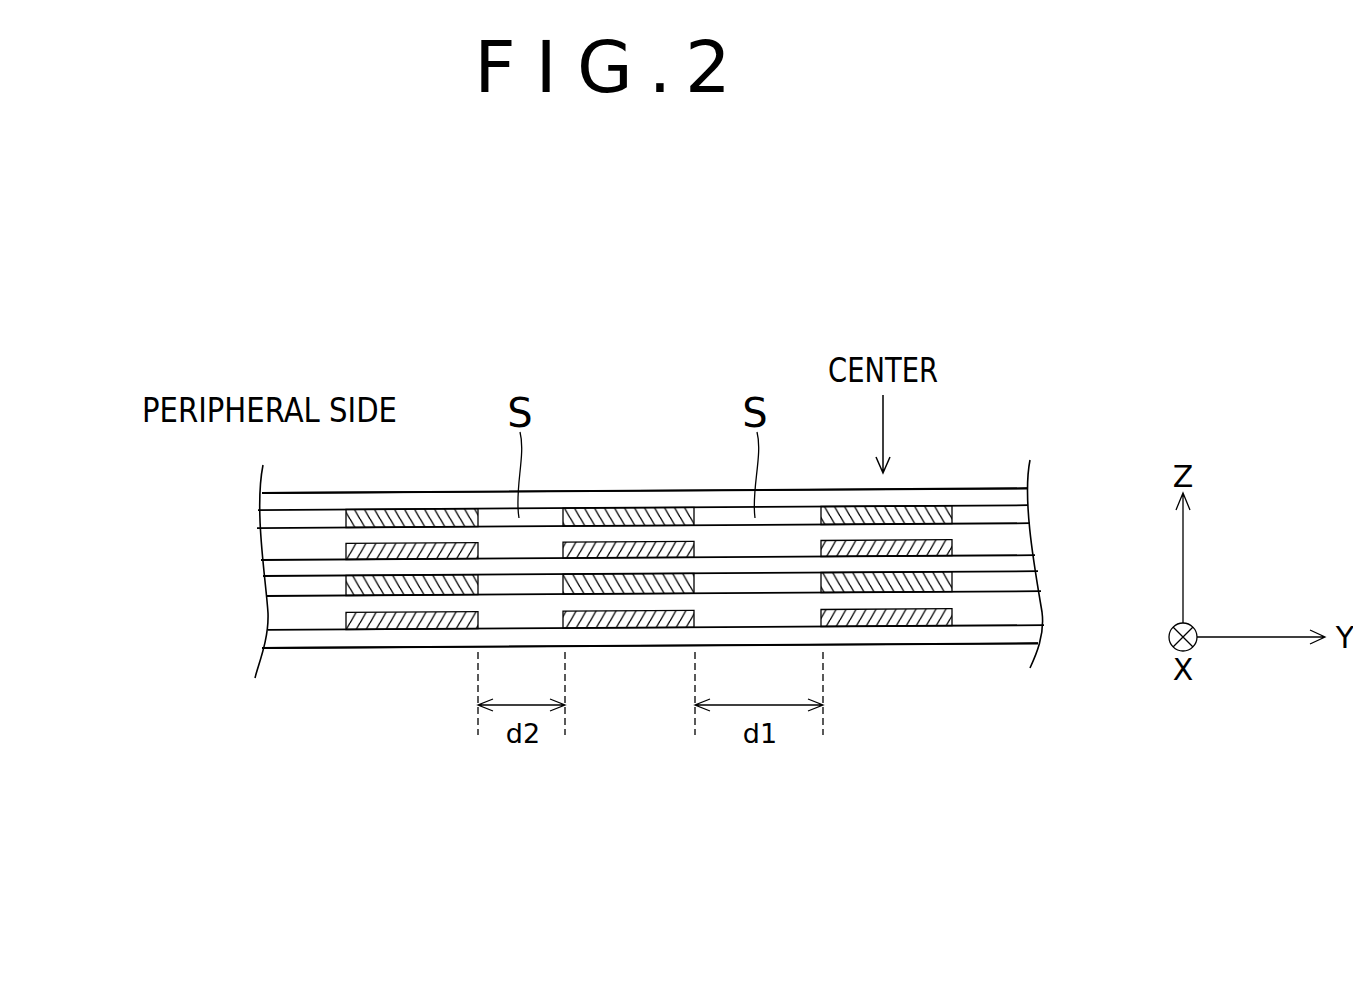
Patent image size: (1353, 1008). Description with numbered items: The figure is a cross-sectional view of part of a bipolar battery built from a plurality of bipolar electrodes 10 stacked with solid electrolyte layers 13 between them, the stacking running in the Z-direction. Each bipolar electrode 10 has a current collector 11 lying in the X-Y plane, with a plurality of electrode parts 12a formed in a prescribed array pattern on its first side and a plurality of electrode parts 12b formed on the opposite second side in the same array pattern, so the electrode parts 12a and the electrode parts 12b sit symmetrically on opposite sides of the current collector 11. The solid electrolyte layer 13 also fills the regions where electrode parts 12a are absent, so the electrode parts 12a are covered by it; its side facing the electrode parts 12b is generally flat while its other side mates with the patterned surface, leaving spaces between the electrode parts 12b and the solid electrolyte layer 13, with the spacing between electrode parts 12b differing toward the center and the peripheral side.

The bipolar electrode 10 is at (116, 501).
The current collector 11 is at (277, 568).
The electrode part 12a is at (340, 554).
The electrode part 12b is at (320, 583).
The solid electrolyte layer 13 is at (327, 540).